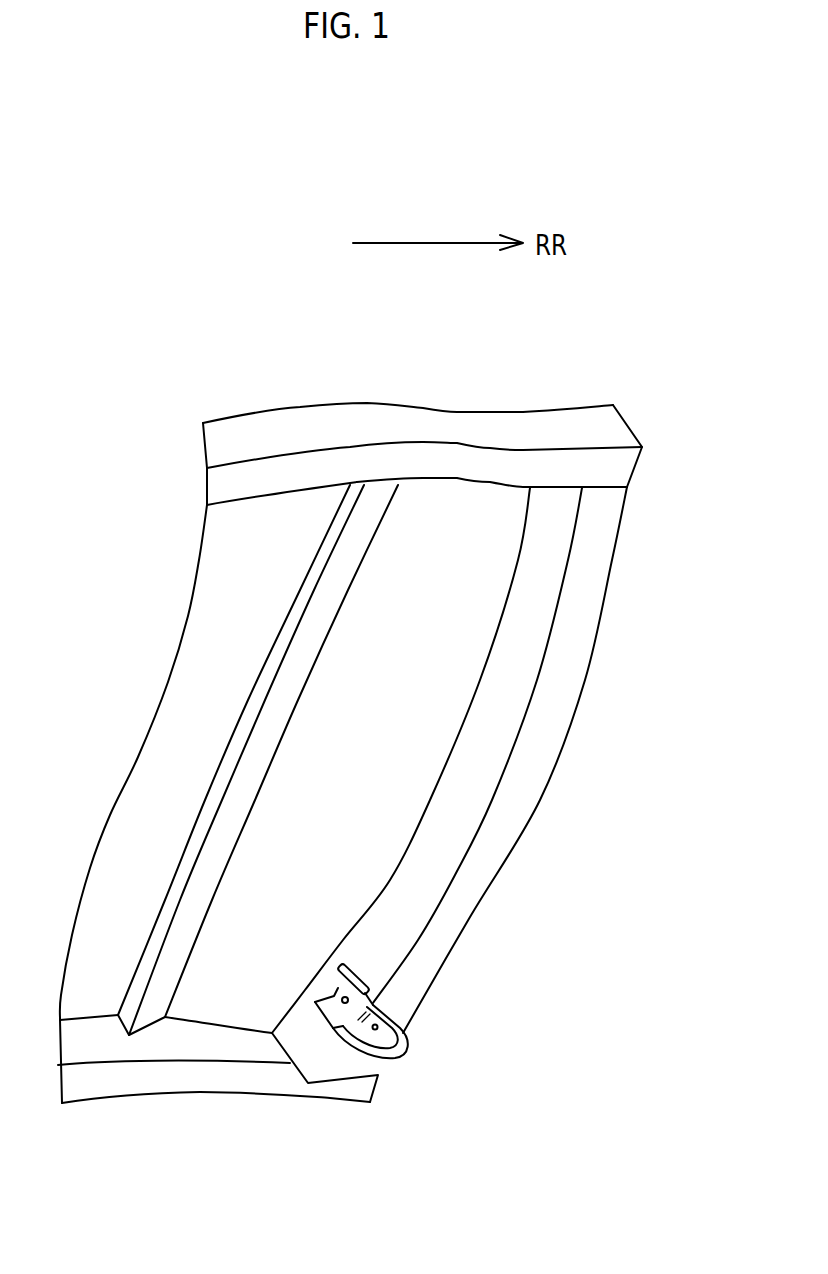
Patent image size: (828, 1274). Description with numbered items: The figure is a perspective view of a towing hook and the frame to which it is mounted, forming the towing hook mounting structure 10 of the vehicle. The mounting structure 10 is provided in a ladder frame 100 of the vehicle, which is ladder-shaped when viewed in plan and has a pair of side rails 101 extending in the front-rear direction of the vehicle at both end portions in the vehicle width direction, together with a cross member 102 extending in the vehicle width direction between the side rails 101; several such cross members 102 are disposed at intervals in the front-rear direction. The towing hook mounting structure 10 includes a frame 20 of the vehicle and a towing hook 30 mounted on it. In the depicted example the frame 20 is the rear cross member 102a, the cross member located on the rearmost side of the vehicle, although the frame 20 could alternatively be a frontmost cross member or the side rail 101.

The towing hook mounting structure 10 is at (492, 982).
The frame 20 is at (497, 830).
The towing hook 30 is at (405, 1055).
The ladder frame 100 is at (110, 1097).
The side rail 101 is at (270, 433).
The cross member 102 is at (535, 578).
The rear cross member 102a is at (555, 665).